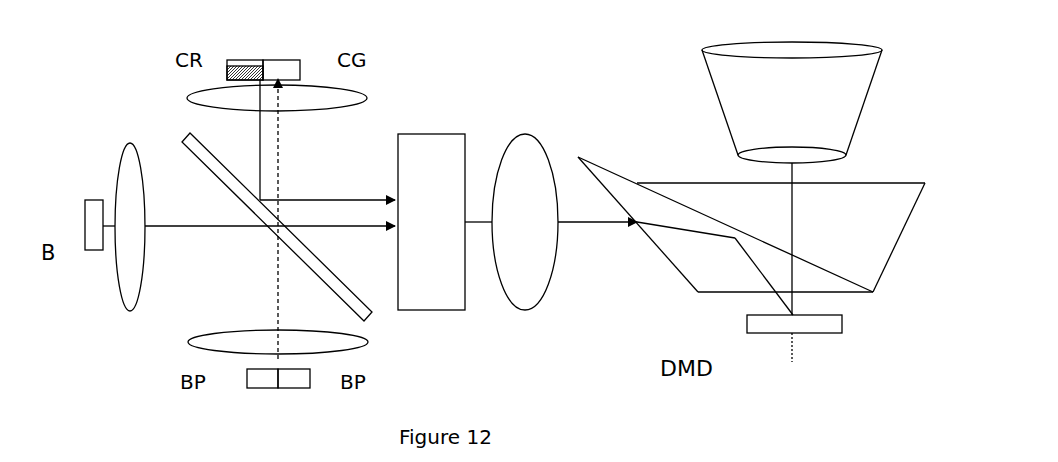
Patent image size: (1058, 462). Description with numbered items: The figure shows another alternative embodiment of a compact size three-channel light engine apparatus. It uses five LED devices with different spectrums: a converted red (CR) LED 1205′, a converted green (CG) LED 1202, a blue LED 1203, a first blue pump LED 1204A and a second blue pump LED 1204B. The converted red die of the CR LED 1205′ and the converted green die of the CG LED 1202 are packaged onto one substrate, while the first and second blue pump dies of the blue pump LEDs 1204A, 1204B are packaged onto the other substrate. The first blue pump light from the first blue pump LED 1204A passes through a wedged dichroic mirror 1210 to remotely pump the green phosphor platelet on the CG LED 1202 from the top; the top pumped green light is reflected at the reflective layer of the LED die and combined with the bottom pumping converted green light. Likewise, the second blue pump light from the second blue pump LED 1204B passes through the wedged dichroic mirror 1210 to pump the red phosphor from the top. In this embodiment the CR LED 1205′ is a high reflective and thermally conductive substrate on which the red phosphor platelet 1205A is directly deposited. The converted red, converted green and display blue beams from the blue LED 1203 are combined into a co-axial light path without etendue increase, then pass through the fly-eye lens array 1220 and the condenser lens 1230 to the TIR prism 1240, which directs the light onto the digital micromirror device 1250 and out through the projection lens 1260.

The converted green (CG) LED 1202 is at (284, 58).
The blue LED 1203 is at (83, 252).
The first blue pump LED 1204A is at (263, 389).
The second blue pump LED 1204B is at (297, 389).
The converted red (CR) LED 1205′ is at (245, 58).
The red phosphor platelet 1205A is at (226, 79).
The wedged dichroic mirror 1210 is at (312, 270).
The fly-eye lens array 1220 is at (432, 133).
The condenser lens 1230 is at (525, 312).
The TIR prism 1240 is at (877, 295).
The DMD 1250 is at (794, 352).
The projection lens 1260 is at (868, 105).